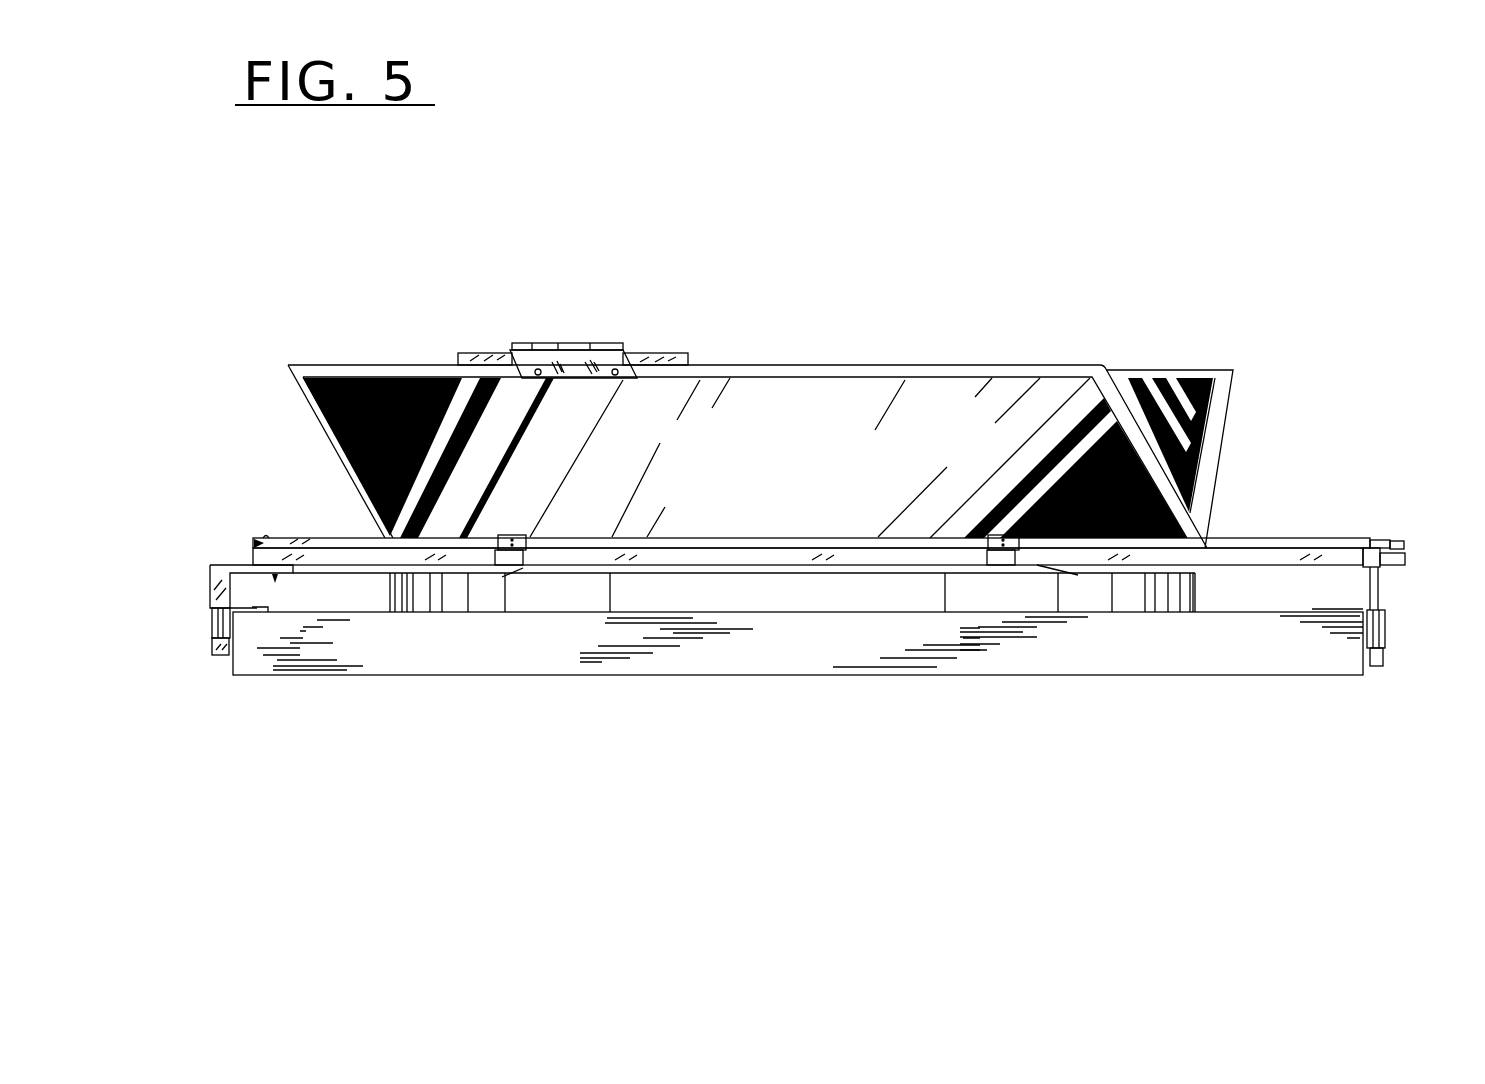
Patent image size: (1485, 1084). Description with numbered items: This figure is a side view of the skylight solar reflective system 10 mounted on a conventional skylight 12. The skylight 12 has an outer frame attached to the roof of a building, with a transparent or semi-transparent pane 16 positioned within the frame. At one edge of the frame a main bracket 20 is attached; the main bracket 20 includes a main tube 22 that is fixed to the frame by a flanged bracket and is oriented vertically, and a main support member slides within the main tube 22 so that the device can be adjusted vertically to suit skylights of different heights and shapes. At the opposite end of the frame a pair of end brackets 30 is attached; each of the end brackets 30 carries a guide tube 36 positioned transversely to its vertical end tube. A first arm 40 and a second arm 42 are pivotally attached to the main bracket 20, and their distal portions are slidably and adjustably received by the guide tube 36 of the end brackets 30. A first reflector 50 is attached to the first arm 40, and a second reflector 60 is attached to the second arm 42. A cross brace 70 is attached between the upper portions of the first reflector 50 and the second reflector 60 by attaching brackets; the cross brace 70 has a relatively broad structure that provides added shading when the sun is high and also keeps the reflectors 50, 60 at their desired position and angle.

The skylight solar reflective system 10 is at (1255, 178).
The skylight 12 is at (1115, 681).
The pane 16 is at (590, 568).
The main bracket 20 is at (227, 552).
The main tube 22 is at (212, 636).
The end brackets 30 is at (1395, 640).
The guide tube 36 is at (1376, 553).
The first arm 40 is at (1228, 553).
The second arm 42 is at (1317, 542).
The first reflector 50 is at (897, 378).
The second reflector 60 is at (1183, 377).
The cross brace 70 is at (655, 358).